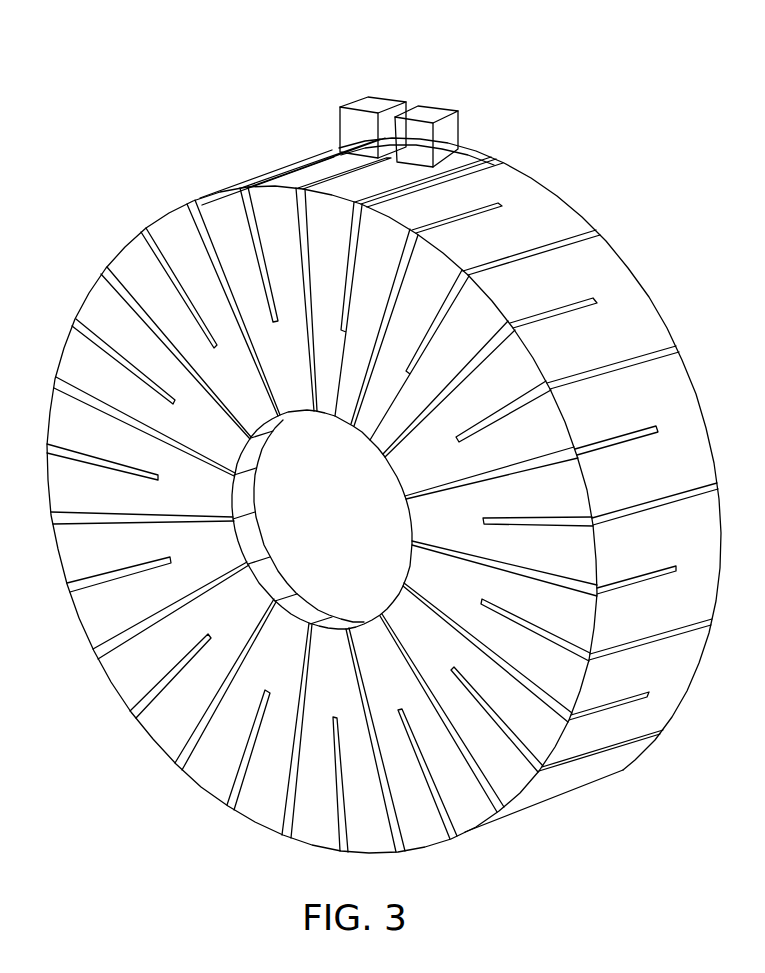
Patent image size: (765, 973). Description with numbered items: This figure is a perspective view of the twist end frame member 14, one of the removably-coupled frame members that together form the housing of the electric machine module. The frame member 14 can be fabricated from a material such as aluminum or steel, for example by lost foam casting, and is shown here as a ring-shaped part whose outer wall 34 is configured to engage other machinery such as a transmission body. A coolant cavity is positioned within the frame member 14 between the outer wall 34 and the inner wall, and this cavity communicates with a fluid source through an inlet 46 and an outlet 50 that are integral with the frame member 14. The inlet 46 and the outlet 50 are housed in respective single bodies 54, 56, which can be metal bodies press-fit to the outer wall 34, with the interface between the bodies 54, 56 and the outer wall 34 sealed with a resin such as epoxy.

The twist end frame member 14 is at (238, 42).
The outer wall 34 is at (531, 210).
The inlet 46 is at (425, 102).
The outlet 50 is at (376, 101).
The single body 54 is at (432, 143).
The single body 56 is at (356, 134).